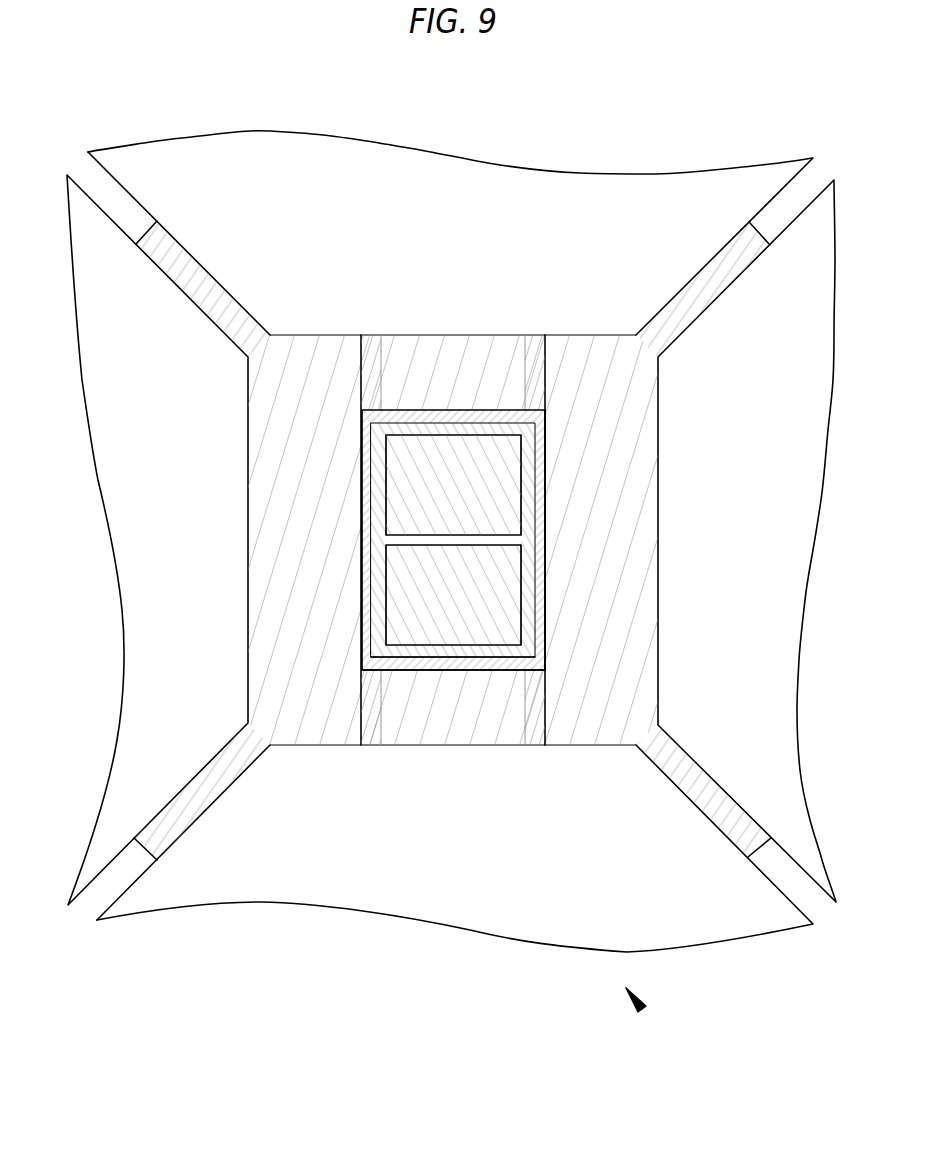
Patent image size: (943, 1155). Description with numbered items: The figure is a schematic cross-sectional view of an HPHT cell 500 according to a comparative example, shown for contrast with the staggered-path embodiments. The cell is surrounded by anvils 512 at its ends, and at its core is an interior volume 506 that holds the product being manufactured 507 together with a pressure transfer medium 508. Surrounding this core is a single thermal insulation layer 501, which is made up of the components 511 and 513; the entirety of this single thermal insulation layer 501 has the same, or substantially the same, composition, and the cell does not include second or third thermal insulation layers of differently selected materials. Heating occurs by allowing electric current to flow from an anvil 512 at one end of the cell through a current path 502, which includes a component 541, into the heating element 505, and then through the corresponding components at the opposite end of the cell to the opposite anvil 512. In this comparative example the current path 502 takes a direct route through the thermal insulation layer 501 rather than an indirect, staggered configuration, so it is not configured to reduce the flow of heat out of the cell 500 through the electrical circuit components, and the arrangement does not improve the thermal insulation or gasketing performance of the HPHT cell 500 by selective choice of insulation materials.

The HPHT cell 500 is at (642, 1009).
The thermal insulation layer 501 is at (560, 476).
The thermal insulation layer 513 is at (740, 248).
The thermal insulation layer 511 is at (418, 386).
The current path 502 is at (540, 335).
The heating element 505 is at (363, 498).
The pressure transfer medium 508 is at (385, 445).
The interior volume 506 is at (525, 565).
The product being manufactured 507 is at (440, 598).
The component of the current path 541 is at (545, 670).
The anvil 512 is at (430, 262).